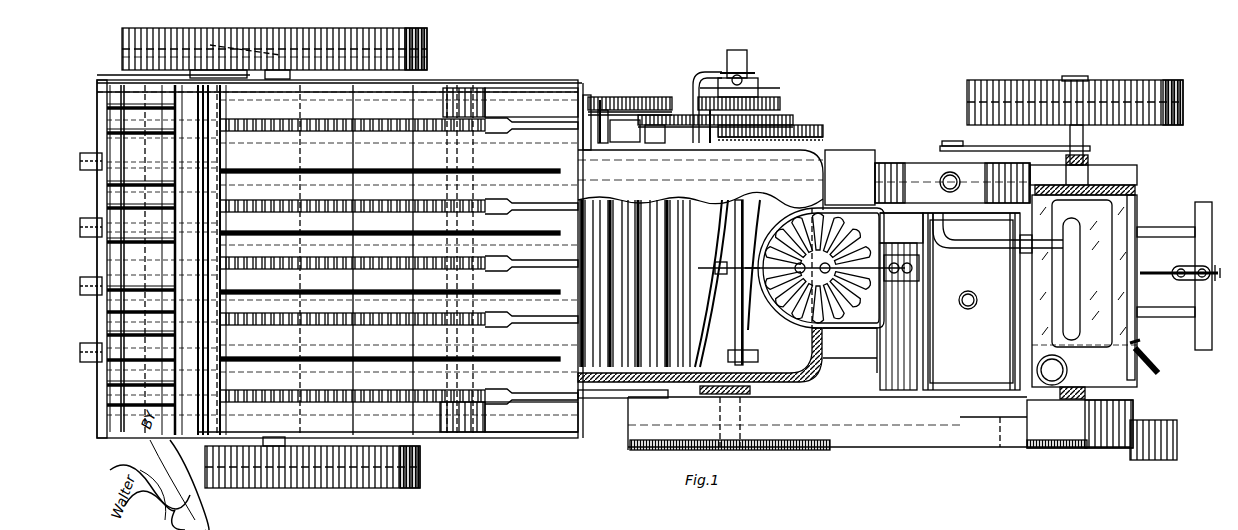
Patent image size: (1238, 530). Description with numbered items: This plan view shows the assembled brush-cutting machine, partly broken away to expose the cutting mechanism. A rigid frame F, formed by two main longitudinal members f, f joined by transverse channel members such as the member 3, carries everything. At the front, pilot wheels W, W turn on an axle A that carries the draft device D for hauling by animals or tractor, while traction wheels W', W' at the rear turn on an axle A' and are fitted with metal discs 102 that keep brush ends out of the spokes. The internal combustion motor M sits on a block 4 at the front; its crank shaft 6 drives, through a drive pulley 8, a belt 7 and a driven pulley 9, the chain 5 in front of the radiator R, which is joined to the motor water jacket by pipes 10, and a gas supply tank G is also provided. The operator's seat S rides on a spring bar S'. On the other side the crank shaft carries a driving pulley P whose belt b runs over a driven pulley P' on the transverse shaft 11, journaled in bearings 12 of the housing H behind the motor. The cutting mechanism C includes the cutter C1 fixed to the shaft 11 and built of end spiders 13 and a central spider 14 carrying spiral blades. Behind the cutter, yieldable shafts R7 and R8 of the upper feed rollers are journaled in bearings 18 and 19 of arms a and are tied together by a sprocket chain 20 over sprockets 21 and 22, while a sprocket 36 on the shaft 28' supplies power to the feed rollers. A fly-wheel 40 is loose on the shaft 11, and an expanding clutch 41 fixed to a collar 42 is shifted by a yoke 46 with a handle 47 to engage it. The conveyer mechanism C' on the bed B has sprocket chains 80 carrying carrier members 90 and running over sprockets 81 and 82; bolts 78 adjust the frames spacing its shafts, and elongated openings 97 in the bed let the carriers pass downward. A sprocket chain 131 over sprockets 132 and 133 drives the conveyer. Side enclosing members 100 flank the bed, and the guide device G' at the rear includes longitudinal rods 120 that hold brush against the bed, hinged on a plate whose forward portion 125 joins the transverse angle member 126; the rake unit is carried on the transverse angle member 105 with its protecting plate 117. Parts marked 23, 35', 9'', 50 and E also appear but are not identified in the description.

The traction wheels W' is at (291, 248).
The metal discs 102 is at (408, 30).
The transverse angle member 126 is at (97, 83).
The guide device G' is at (91, 257).
The side enclosing members 100 is at (440, 80).
The transverse angle member 105 is at (130, 420).
The protecting plate 117 is at (399, 259).
The sprockets 82 is at (205, 112).
The sprocket 132 is at (480, 80).
The sprocket chain 131 is at (530, 90).
The transverse shaft R7 is at (608, 95).
The bolts 78 is at (352, 260).
The sprockets 81 is at (490, 131).
The longitudinal rods 120 is at (545, 175).
The elongated openings 97 is at (390, 250).
The sprocket chains 80 is at (370, 125).
The carrier members 90 is at (440, 150).
The forward portion 125 is at (110, 160).
The conveyer mechanism C' is at (415, 194).
The bed B is at (393, 220).
The bearings 18 is at (551, 267).
The axle A' is at (298, 462).
The sprocket 21 is at (578, 109).
The sprocket 133 is at (595, 95).
The sprocket chain 20 is at (625, 97).
The sprocket 22 is at (645, 97).
The arms a is at (615, 410).
The bearings 19 is at (672, 113).
The transverse shaft R8 is at (655, 97).
The fly-wheel 40 is at (780, 102).
The sprocket 36 is at (770, 115).
The shaft 35' is at (836, 108).
The shaft 28' is at (786, 125).
The shaft 9'' is at (783, 135).
The expanding clutch device 41 is at (744, 90).
The collar 42 is at (755, 80).
The clutch operating yoke 46 is at (761, 76).
The handle 47 is at (748, 68).
The transverse shaft 11 is at (735, 50).
The lever 50 is at (696, 72).
The driven pulley 9 is at (838, 96).
The housing H is at (705, 175).
The tubes 23 is at (635, 318).
The cutting mechanism C is at (727, 283).
The cutter C1 is at (735, 335).
The central spider 14 is at (718, 280).
The end spiders 13 is at (760, 358).
The bearings 12 is at (790, 385).
The operator's seat S is at (825, 268).
The spring bar S' is at (901, 280).
The rigid frame F is at (862, 271).
The engine casing E is at (846, 345).
The main longitudinal members f is at (1004, 265).
The pilot wheels W is at (1075, 267).
The belt 7 is at (1015, 145).
The drive pulley 8 is at (1085, 150).
The crank shaft 6 is at (1090, 160).
The radiator R is at (920, 170).
The chain 5 is at (940, 158).
The gas supply tank G is at (950, 301).
The pipes 10 is at (950, 250).
The draft device D is at (1135, 330).
The transverse channel member 3 is at (1044, 370).
The internal combustion motor M is at (1150, 350).
The block 4 is at (1130, 198).
The driving pulley P is at (1094, 419).
The driving belt b is at (879, 440).
The driven pulley P' is at (787, 458).
The axle A is at (1080, 474).